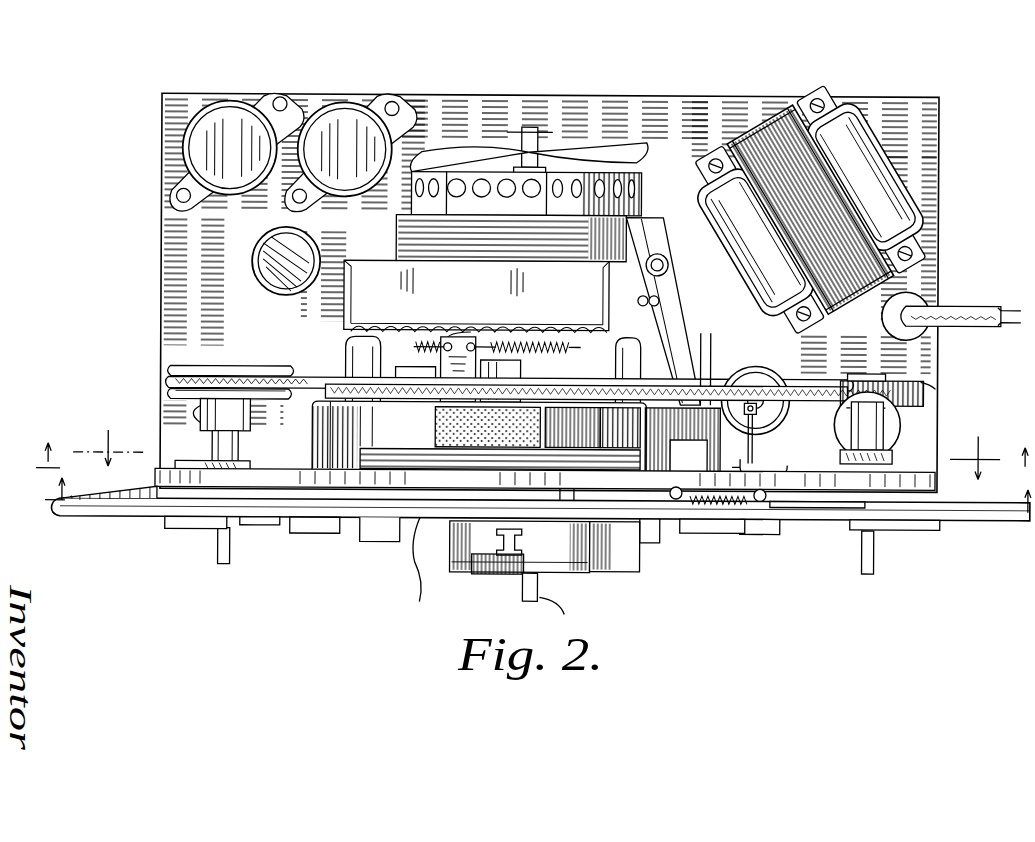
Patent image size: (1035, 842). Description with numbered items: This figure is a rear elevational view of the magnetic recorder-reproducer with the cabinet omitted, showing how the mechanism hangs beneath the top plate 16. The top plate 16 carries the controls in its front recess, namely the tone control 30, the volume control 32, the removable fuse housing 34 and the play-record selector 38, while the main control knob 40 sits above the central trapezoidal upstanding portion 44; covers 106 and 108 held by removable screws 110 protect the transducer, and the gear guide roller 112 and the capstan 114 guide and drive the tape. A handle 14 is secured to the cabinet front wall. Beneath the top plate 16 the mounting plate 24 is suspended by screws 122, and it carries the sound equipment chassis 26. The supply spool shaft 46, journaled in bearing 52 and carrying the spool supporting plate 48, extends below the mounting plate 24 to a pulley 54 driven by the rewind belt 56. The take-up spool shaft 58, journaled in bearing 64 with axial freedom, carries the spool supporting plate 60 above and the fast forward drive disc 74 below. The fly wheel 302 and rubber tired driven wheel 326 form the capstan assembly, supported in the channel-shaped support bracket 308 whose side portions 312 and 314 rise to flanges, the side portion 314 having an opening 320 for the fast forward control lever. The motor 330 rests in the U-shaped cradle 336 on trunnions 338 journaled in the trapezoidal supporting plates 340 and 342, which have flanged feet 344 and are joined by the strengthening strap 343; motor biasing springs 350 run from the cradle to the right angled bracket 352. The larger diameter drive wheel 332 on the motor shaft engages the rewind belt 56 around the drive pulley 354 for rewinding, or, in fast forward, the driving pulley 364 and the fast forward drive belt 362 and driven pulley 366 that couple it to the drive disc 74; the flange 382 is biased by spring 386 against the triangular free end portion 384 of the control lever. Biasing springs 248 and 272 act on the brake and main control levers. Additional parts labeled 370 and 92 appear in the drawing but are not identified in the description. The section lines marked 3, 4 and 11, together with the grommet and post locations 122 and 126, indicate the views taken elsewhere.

The sound equipment chassis 26 is at (178, 222).
The motor 330 is at (628, 205).
The supporting plate 340 is at (380, 252).
The strengthening strap 343 is at (476, 295).
The right angled bracket 352 is at (470, 330).
The motor biasing springs 350 is at (398, 335).
The supporting plate 342 is at (650, 232).
The drive pulley 354 is at (487, 370).
The larger diameter drive wheel 332 is at (512, 378).
The driving pulley 364 is at (575, 392).
The cradle 336 is at (340, 350).
The pulley 54 is at (165, 365).
The rewind belt 56 is at (300, 370).
The flanged feet 344 is at (280, 375).
The bearing 52 is at (200, 410).
The supply spool shaft 46 is at (238, 448).
The support bracket 308 is at (410, 412).
The side portion 312 is at (312, 452).
The driven wheel 326 is at (500, 437).
The opening 320 is at (682, 442).
The side portion 314 is at (718, 428).
The disc 370 is at (702, 385).
The trunnions 338 is at (705, 360).
The driven pulley 366 is at (795, 383).
The fast forward drive belt 362 is at (810, 383).
The biasing spring 386 is at (770, 412).
The flange 382 is at (758, 440).
The triangular free end portion 384 is at (790, 468).
The bearing 64 is at (885, 415).
The fast forward drive disc 74 is at (930, 385).
The take-up spool shaft 58 is at (880, 450).
The handle 14 is at (856, 333).
The mounting plate 24 is at (144, 481).
The top plate 16 is at (335, 533).
The capstan 114 is at (560, 497).
The spool supporting plate 48 is at (198, 530).
The volume control 32 is at (262, 527).
The play-record selector 38 is at (372, 540).
The fly wheel 302 is at (440, 522).
The removable screws 110 is at (455, 570).
The hub 92 is at (498, 560).
The cover 106 is at (482, 575).
The gear guide roller 112 is at (518, 580).
The main control knob 40 is at (563, 617).
The cover 108 is at (610, 572).
The upstanding portion 44 is at (648, 540).
The biasing spring 272 is at (712, 505).
The tone control 30 is at (730, 545).
The biasing spring 248 is at (786, 530).
The removable fuse housing 34 is at (732, 532).
The spool supporting plate 60 is at (928, 528).
The section line 11 is at (536, 440).
The section line 4 is at (532, 445).
The section line 3 is at (530, 499).
The screws 122 is at (200, 462).
The dimension 126 is at (205, 468).